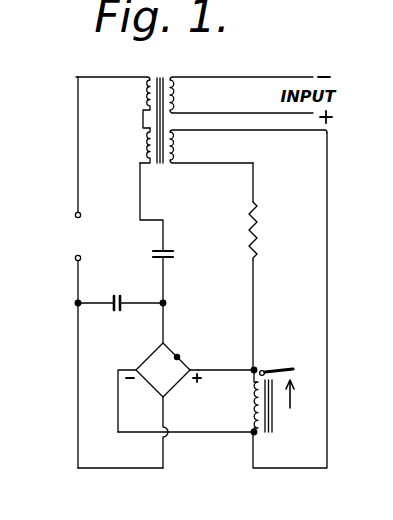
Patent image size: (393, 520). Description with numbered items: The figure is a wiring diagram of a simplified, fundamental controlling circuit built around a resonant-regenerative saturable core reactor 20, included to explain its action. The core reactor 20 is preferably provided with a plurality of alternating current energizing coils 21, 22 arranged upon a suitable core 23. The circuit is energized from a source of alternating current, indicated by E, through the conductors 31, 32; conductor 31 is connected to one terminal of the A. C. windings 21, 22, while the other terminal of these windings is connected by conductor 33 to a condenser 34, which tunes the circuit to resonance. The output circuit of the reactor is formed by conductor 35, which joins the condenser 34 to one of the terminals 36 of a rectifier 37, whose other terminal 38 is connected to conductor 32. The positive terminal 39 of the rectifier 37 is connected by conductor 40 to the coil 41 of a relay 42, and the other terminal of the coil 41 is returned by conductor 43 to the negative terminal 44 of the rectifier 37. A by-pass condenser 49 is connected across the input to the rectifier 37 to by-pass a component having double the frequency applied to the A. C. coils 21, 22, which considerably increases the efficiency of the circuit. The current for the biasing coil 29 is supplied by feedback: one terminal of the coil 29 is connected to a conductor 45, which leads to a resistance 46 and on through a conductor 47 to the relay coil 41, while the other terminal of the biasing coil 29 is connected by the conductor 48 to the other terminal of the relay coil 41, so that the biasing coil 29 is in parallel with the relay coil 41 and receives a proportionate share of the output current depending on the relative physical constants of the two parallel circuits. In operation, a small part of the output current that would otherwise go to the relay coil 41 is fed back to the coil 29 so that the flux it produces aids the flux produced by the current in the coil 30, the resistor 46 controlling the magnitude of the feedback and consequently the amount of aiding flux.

The core reactor 20 is at (201, 106).
The alternating current energizing coil 21 is at (147, 97).
The alternating current energizing coil 22 is at (147, 149).
The core 23 is at (165, 78).
The biasing coil 29 is at (178, 153).
The coil 30 is at (178, 101).
The conductor 31 is at (78, 184).
The conductor 32 is at (78, 302).
The conductor 33 is at (140, 211).
The condenser 34 is at (175, 257).
The conductor 35 is at (165, 301).
The terminal 36 is at (167, 343).
The rectifier 37 is at (178, 357).
The terminal 38 is at (166, 398).
The positive terminal 39 is at (191, 370).
The conductor 40 is at (233, 370).
The coil 41 is at (252, 405).
The relay 42 is at (270, 437).
The conductor 43 is at (215, 434).
The negative terminal 44 is at (136, 368).
The conductor 45 is at (254, 184).
The resistance 46 is at (258, 231).
The conductor 47 is at (253, 318).
The conductor 48 is at (327, 247).
The condenser 49 is at (114, 306).